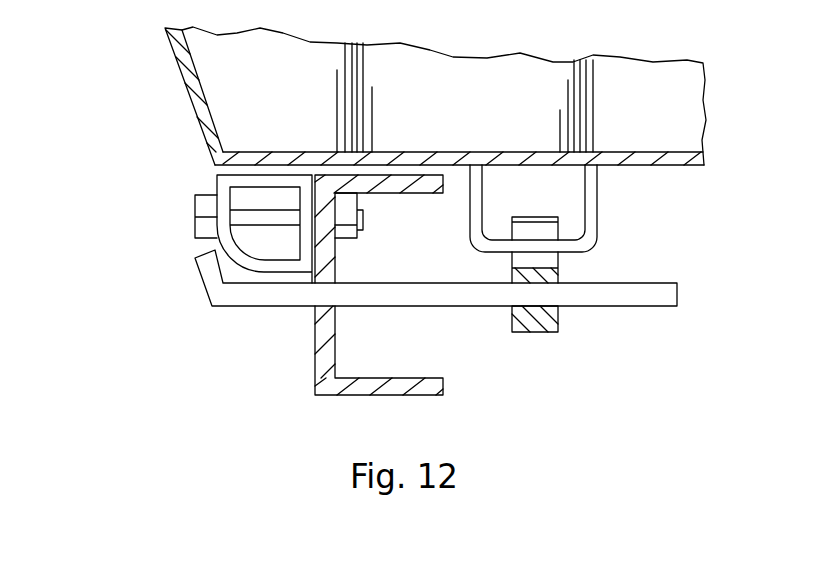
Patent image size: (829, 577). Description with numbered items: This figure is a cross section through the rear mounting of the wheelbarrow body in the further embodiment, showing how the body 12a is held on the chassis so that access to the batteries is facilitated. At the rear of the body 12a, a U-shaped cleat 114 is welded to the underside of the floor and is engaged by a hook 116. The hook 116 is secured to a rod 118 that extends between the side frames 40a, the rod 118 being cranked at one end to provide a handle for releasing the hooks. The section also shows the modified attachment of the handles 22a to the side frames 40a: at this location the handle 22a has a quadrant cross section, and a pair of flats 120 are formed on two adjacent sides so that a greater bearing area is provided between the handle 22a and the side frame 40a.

The body 12a is at (177, 70).
The handle 22a is at (228, 238).
The side frame 40a is at (313, 358).
The U-shaped cleat 114 is at (588, 212).
The hook 116 is at (535, 333).
The rod 118 is at (625, 298).
The flat 120 is at (253, 176).